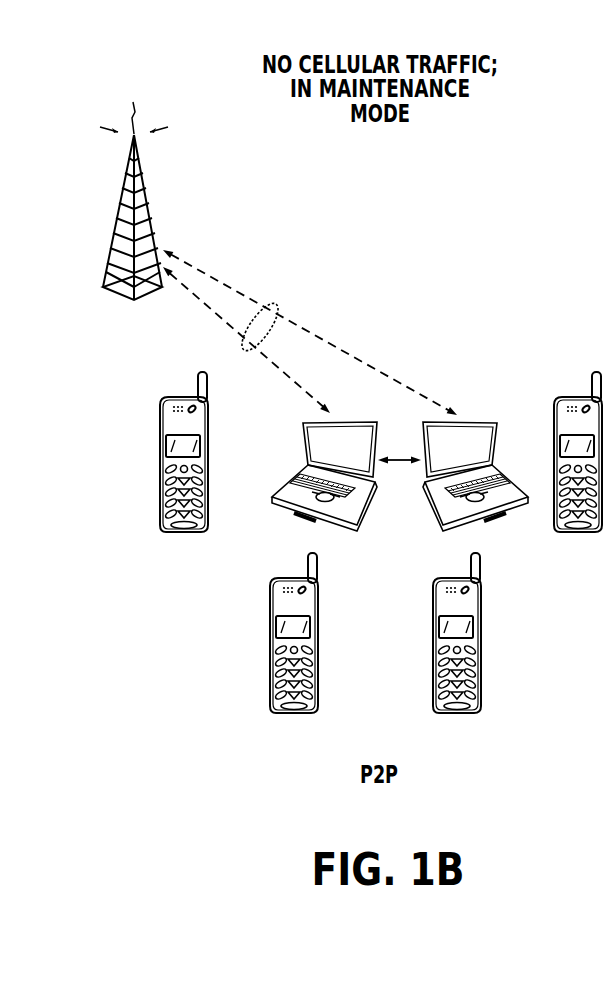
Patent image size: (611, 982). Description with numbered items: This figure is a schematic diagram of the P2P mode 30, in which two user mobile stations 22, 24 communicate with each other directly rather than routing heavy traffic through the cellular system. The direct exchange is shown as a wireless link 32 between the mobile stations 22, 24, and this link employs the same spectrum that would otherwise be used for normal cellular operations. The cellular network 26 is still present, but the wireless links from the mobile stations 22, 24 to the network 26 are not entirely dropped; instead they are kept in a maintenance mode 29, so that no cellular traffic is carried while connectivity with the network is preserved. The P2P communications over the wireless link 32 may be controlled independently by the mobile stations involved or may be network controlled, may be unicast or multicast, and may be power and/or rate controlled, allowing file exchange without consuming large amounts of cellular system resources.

The mobile station 22 is at (333, 441).
The mobile station 24 is at (467, 441).
The cellular network 26 is at (147, 167).
The maintenance mode 29 is at (278, 309).
The P2P mode 30 is at (452, 372).
The wireless link 32 is at (397, 464).